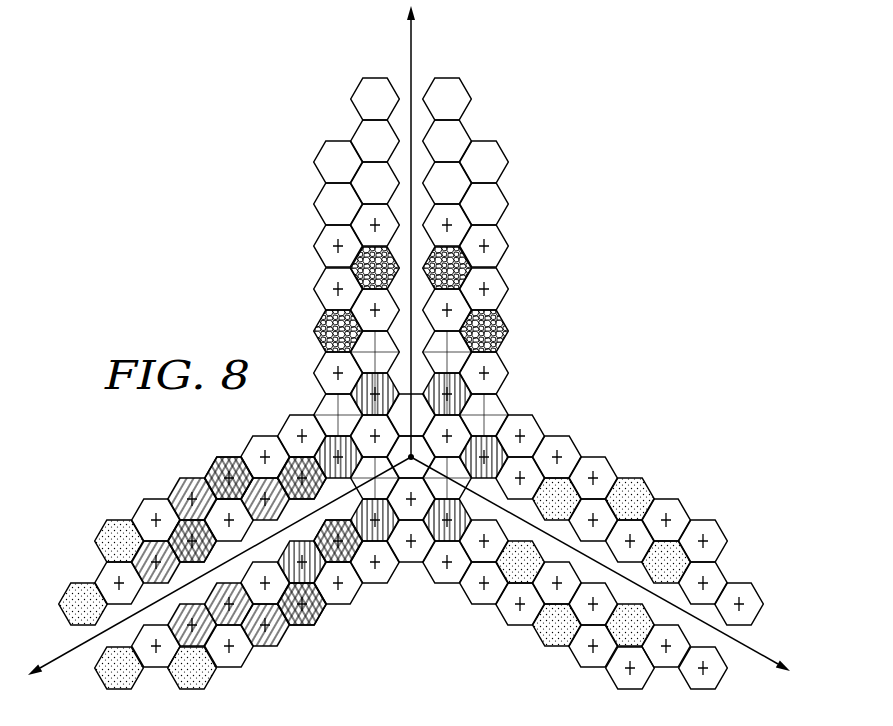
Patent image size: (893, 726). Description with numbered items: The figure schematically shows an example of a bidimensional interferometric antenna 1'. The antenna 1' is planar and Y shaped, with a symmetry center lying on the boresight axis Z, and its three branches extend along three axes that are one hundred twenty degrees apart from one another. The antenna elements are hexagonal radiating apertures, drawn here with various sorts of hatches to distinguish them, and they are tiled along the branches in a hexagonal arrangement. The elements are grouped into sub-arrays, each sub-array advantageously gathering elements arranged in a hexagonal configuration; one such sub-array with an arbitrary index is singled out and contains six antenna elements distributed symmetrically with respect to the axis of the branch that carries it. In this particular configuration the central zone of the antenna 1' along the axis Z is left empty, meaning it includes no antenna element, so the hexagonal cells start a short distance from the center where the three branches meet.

The bidimensional interferometric antenna 1' is at (418, 391).
The axis Z is at (411, 457).